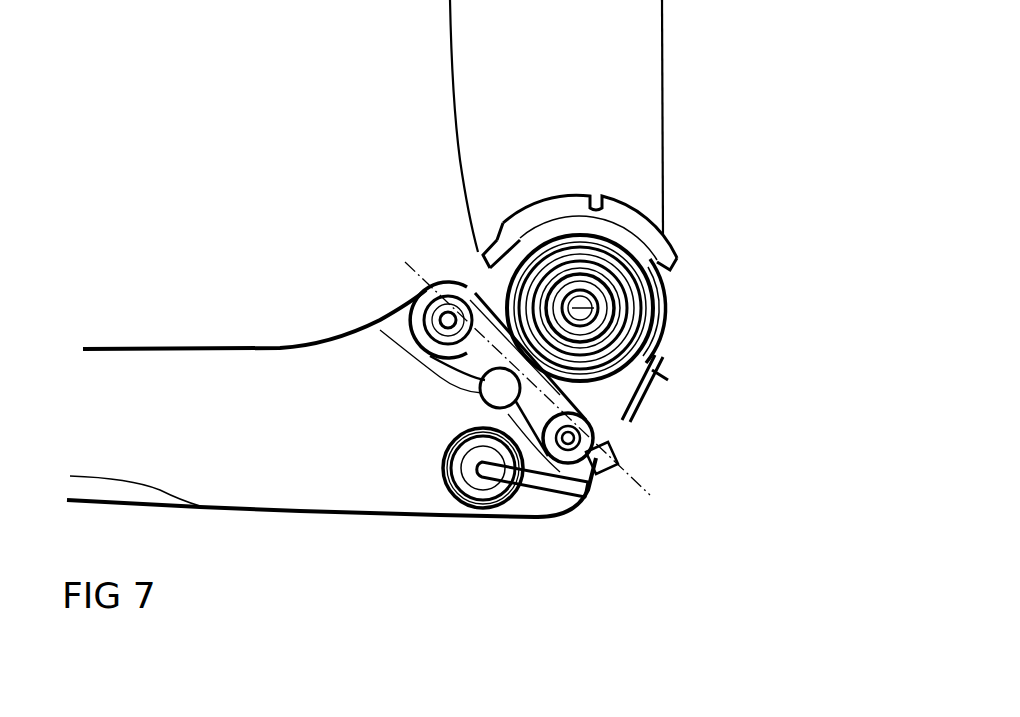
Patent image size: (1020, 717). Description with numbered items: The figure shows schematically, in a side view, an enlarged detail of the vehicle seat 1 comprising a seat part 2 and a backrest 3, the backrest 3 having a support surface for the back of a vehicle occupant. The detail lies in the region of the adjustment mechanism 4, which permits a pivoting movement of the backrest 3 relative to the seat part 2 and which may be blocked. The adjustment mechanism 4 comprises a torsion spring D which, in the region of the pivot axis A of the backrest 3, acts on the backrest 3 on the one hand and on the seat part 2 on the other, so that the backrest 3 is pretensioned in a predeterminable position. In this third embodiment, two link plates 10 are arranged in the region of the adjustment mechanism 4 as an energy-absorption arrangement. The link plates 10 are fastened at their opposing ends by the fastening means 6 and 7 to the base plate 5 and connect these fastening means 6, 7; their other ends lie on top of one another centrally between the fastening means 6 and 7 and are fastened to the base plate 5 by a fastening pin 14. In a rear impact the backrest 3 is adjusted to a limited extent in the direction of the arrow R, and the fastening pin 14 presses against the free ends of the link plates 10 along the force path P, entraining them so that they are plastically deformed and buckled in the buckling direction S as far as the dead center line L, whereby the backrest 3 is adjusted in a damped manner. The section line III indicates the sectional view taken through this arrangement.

The vehicle seat 1 is at (116, 67).
The seat part 2 is at (520, 520).
The backrest 3 is at (663, 157).
The adjustment mechanism 4 is at (694, 316).
The base plate 5 is at (466, 265).
The fastening means 6 is at (424, 282).
The fastening means 7 is at (618, 438).
The link plates 10 is at (412, 320).
The fastening pin 14 is at (380, 328).
The arrow R is at (240, 187).
The pivot axis A is at (648, 330).
The torsion spring D is at (653, 270).
The dead center line L is at (446, 294).
The force path P is at (478, 411).
The buckling direction S is at (565, 393).
The section line III- III is at (400, 257).